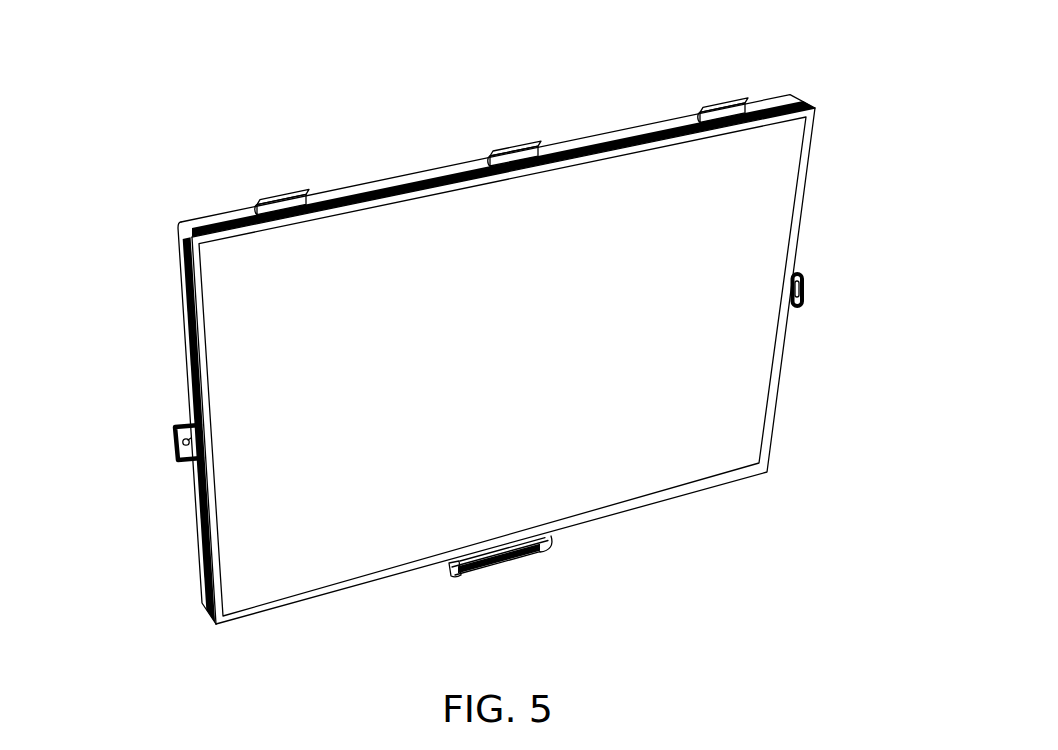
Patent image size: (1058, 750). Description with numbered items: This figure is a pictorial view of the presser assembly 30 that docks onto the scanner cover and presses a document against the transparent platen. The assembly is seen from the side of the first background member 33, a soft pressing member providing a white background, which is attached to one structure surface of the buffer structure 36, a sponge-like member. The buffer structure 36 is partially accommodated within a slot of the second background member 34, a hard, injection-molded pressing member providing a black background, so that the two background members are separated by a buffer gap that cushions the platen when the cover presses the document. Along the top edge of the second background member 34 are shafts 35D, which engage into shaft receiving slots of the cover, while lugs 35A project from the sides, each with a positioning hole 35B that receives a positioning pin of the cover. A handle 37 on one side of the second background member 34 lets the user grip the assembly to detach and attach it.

The presser assembly 30 is at (199, 194).
The first background member 33 is at (782, 158).
The second background member 34 is at (382, 183).
The lug 35A is at (174, 423).
The positioning hole 35B is at (177, 449).
The shaft 35D is at (288, 190).
The buffer structure 36 is at (792, 93).
The handle 37 is at (516, 554).